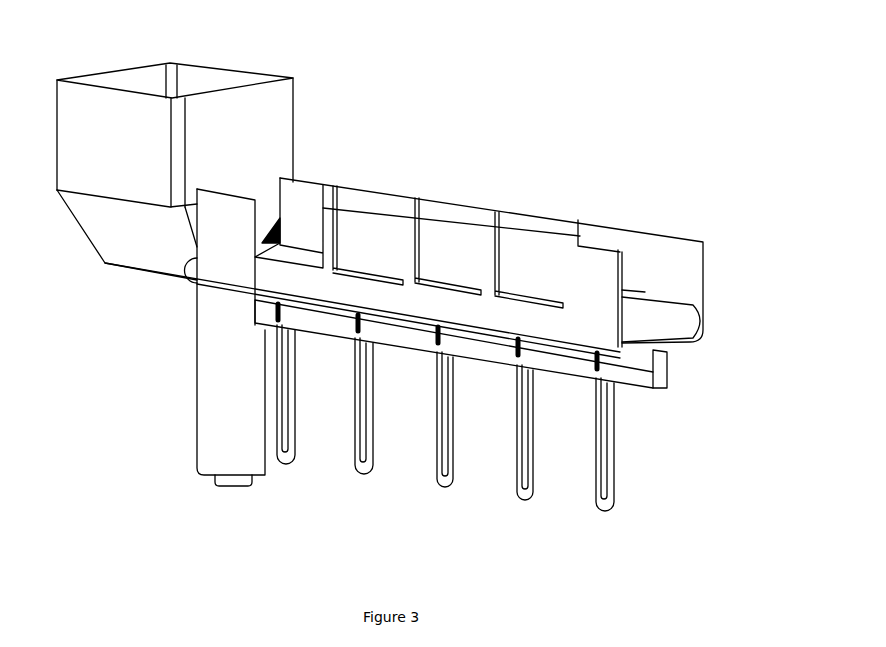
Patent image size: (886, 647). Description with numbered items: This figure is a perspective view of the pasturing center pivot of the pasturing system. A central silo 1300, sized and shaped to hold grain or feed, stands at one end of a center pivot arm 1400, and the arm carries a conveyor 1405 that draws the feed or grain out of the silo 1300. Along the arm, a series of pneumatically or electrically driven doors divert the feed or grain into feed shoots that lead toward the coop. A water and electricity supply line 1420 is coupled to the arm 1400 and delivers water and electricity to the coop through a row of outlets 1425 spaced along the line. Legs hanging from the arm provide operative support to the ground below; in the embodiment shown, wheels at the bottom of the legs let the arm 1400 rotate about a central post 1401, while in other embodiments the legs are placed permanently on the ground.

The central silo 1300 is at (133, 128).
The center pivot arm 1400 is at (404, 236).
The central post 1401 is at (240, 383).
The conveyor 1405 is at (648, 332).
The water and electricity supply line 1420 is at (657, 367).
The outlet 1425 is at (605, 372).